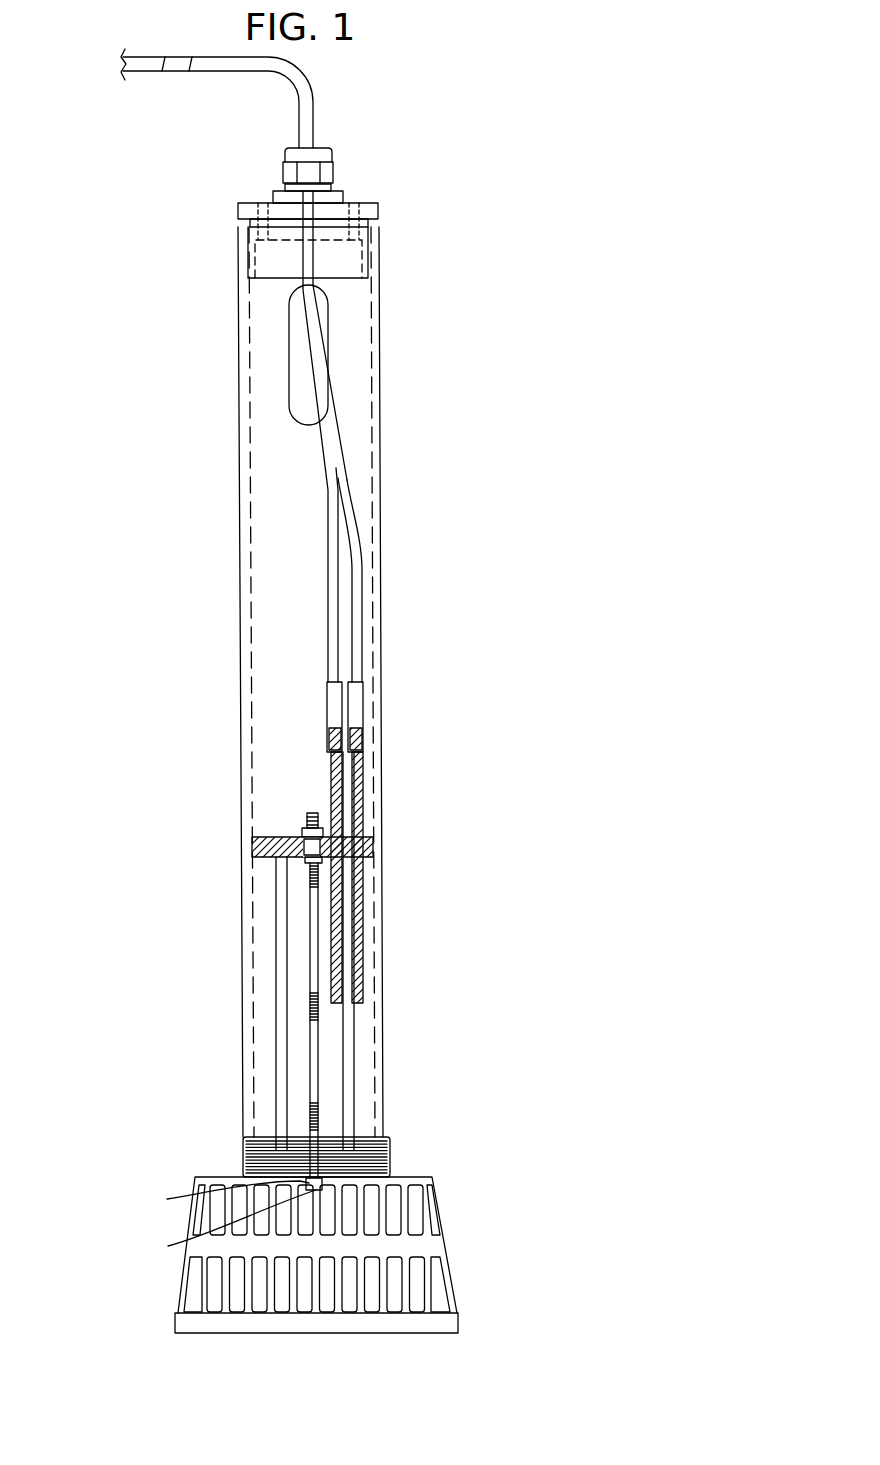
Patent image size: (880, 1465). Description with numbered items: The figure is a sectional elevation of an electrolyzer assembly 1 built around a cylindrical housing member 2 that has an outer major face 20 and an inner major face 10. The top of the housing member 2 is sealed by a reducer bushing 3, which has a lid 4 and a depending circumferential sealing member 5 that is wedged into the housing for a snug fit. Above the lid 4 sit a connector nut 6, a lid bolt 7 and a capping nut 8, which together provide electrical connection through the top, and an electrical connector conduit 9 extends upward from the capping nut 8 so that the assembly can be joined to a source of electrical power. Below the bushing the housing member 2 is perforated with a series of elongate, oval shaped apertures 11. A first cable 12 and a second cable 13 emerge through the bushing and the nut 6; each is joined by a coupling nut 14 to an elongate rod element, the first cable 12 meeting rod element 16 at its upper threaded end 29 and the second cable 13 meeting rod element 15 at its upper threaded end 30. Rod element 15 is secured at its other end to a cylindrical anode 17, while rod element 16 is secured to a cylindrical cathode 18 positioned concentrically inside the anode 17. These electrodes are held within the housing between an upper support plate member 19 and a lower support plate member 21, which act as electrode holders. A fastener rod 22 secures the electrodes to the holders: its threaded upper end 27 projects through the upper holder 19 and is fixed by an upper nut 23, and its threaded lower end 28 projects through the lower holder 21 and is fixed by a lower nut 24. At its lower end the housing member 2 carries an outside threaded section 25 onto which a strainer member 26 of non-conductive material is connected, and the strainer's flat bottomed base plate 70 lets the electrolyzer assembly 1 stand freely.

The electrolyzer assembly 1 is at (106, 300).
The housing member 2 is at (384, 905).
The reducer bushing 3 is at (223, 207).
The lid 4 is at (381, 208).
The circumferential sealing member 5 is at (364, 259).
The nut 6 is at (284, 190).
The lid bolt 7 is at (346, 196).
The capping nut 8 is at (337, 173).
The electrical connector conduit 9 is at (314, 129).
The inner major face 10 is at (251, 462).
The apertures 11 is at (331, 341).
The first electrical cable 12 is at (328, 549).
The second electrical cable 13 is at (357, 577).
The coupling nut 14 is at (365, 689).
The rod element 15 is at (365, 973).
The rod element 16 is at (330, 776).
The cylindrical anode 17 is at (276, 977).
The cylindrical cathode 18 is at (345, 1028).
The upper support plate member 19 is at (255, 848).
The outer major face 20 is at (382, 440).
The lower support plate member 21 is at (244, 1166).
The fastener rod 22 is at (310, 1053).
The upper nut 23 is at (304, 832).
The lower nut 24 is at (217, 1198).
The outside threaded section 25 is at (388, 1140).
The strainer member 26 is at (438, 1186).
The threaded upper end 27 is at (320, 818).
The threaded lower end 28 is at (225, 1222).
The upper threaded end 29 is at (343, 729).
The upper threaded end 30 is at (367, 745).
The flat bottomed base plate 70 is at (457, 1322).